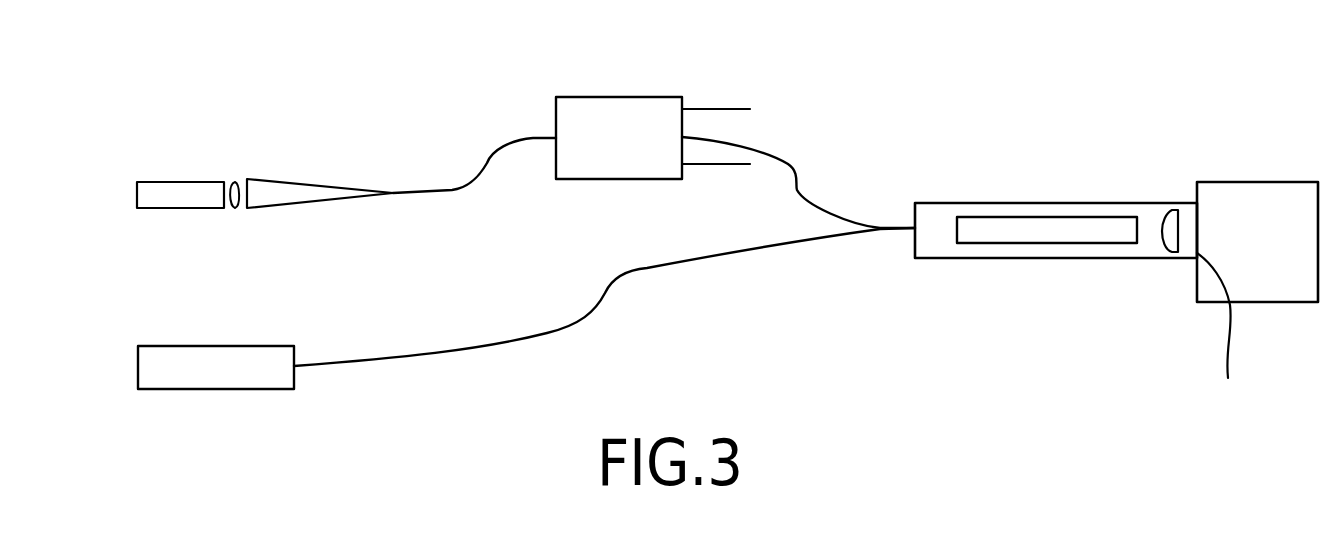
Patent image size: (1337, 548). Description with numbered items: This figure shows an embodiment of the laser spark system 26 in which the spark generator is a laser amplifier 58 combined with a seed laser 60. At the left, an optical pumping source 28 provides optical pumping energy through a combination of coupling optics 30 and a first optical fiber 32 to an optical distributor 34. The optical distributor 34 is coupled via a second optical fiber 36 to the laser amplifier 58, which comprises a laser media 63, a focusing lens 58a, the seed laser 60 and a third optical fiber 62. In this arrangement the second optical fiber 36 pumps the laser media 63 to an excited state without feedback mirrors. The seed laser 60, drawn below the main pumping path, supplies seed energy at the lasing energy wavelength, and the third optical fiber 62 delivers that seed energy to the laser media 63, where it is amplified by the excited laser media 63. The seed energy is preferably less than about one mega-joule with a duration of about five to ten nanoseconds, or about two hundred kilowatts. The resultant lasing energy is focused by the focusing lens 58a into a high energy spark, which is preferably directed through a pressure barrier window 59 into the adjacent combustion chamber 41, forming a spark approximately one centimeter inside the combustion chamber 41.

The laser spark system 26 is at (732, 88).
The optical pumping source 28 is at (162, 182).
The coupling optics 30 is at (350, 200).
The first optical fiber 32 is at (452, 188).
The optical distributor 34 is at (653, 138).
The second optical fiber 36 is at (790, 163).
The combustion chamber 41 is at (1257, 242).
The laser amplifier 58 is at (1143, 210).
The focusing lens 58a is at (1162, 243).
The pressure barrier window 59 is at (1223, 332).
The seed laser 60 is at (216, 367).
The third optical fiber 62 is at (647, 268).
The laser media 63 is at (1054, 231).